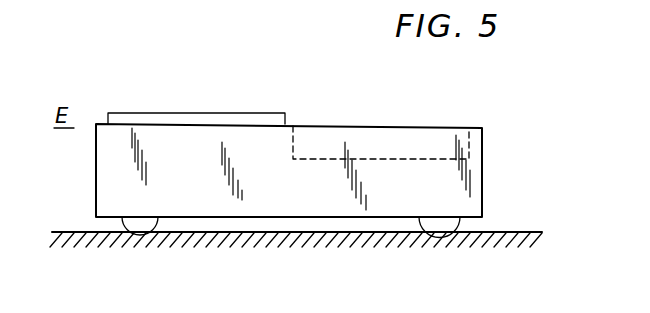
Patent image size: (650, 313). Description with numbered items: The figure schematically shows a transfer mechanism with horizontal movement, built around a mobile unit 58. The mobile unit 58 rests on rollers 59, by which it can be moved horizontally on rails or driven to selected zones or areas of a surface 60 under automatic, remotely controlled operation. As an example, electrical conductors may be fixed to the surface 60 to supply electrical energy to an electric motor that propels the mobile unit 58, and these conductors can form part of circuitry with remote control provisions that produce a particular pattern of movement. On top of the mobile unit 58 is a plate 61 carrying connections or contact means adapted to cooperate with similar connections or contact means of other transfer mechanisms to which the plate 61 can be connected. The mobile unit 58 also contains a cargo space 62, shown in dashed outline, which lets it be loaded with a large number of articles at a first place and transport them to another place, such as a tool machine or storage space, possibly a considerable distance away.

The mobile unit 58 is at (476, 178).
The rollers 59 is at (455, 222).
The surface 60 is at (507, 232).
The plate 61 is at (243, 112).
The cargo space 62 is at (383, 150).